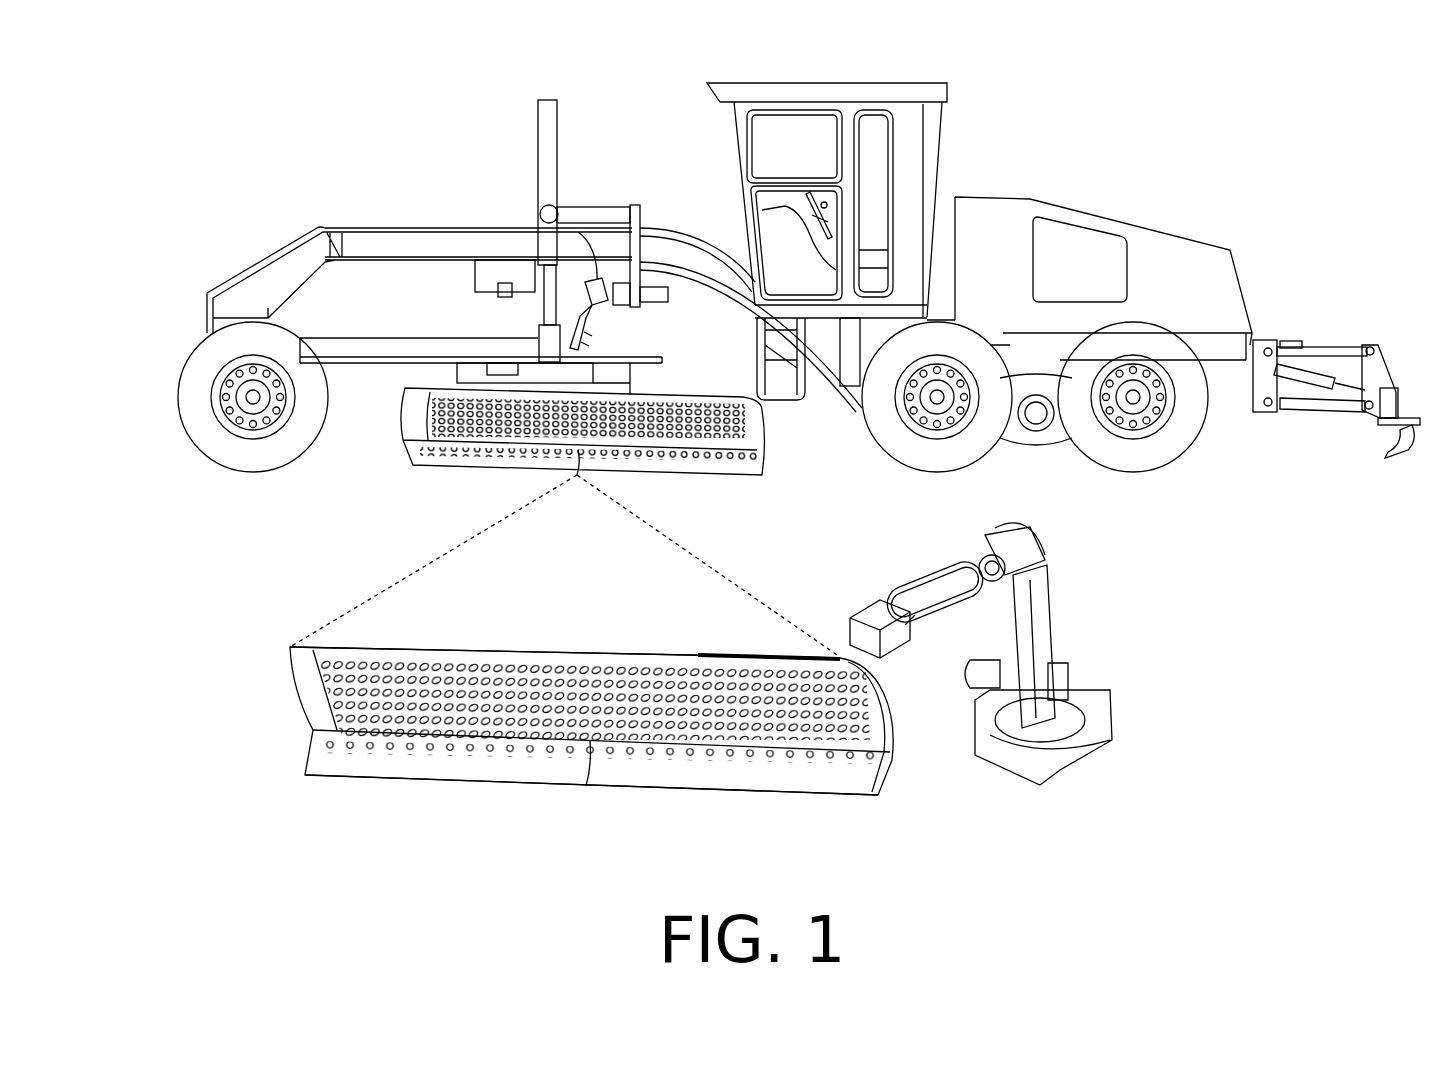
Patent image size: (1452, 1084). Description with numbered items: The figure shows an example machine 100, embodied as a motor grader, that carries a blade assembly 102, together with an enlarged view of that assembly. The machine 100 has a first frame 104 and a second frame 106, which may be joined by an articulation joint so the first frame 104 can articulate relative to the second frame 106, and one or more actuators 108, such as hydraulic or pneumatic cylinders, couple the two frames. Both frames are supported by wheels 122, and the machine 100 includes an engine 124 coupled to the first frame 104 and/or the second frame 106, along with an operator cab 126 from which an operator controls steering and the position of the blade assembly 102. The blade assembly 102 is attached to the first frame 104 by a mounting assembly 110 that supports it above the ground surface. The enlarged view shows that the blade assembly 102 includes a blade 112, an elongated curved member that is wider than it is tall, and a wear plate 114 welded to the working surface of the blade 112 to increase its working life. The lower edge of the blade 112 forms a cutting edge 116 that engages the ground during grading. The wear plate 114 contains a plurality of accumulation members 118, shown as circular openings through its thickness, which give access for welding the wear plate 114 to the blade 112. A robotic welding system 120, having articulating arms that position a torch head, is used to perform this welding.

The machine 100 is at (200, 97).
The blade assembly 102 is at (779, 440).
The first frame 104 is at (465, 343).
The second frame 106 is at (455, 238).
The actuator 108 is at (545, 135).
The mounting assembly 110 is at (652, 377).
The blade 112 is at (542, 650).
The wear plate 114 is at (605, 660).
The cutting edge 116 is at (470, 795).
The accumulation members 118 is at (708, 656).
The robotic welding system 120 is at (1075, 654).
The wheels 122 is at (208, 362).
The engine 124 is at (1125, 205).
The operator cab 126 is at (960, 75).